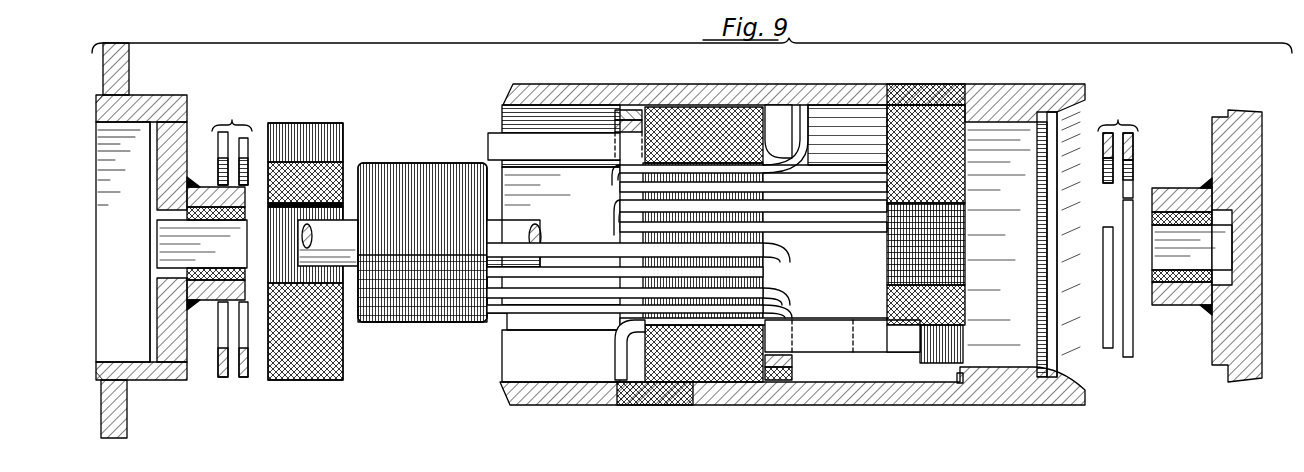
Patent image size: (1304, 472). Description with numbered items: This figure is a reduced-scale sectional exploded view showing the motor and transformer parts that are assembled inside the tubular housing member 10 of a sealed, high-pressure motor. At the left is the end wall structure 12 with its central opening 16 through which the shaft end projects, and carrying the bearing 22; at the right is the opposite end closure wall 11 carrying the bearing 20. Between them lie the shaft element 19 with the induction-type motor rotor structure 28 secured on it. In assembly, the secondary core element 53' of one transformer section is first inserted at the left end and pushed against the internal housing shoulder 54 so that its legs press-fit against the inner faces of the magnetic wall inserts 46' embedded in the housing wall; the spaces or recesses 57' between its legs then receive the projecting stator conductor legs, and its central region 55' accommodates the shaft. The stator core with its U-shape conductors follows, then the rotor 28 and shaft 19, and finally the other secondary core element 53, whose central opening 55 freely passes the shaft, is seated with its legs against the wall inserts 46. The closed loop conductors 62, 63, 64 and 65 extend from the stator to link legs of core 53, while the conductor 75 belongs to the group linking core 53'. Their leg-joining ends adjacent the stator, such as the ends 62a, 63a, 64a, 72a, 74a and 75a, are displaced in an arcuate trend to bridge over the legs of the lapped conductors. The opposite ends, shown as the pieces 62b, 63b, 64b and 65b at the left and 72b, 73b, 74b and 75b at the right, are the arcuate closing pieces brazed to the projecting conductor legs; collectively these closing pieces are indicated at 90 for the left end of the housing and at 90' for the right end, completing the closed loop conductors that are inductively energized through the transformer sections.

The tubular housing member 10 is at (1018, 87).
The end closure wall 11 is at (1255, 153).
The end wall structure 12 is at (858, 348).
The central opening 16 is at (160, 274).
The shaft element 19 is at (518, 230).
The bearing 20 is at (1175, 276).
The bearing 22 is at (200, 272).
The motor rotor structure 28 is at (400, 163).
The wall insert elements 46 is at (678, 383).
The wall inserts 46' is at (927, 128).
The secondary core element 53 is at (322, 250).
The secondary core element 53' is at (947, 300).
The internal housing shoulder 54 is at (958, 384).
The central opening 55 is at (328, 243).
The coil winding 55' is at (948, 244).
The spaces or recesses 57' is at (947, 344).
The closed loop conductor 62 is at (497, 313).
The end of conductor 62 62a is at (772, 380).
The end of conductor 62 62b is at (217, 373).
The closed loop conductor 63 is at (545, 328).
The end of conductor 63 63a is at (784, 380).
The end of conductor 63 63b is at (242, 379).
The closed loop conductor 64 is at (487, 133).
The end of conductor 64 64a is at (778, 112).
The end of conductor 64 64b is at (220, 156).
The closed loop conductor 65 is at (583, 172).
The end of conductor 65 65b is at (249, 148).
The end of conductor 72 72a is at (617, 358).
The end of conductor 72 72b is at (1134, 351).
The end of conductor 73 73b is at (1108, 349).
The end of conductor 74 74a is at (628, 110).
The end of conductor 74 74b is at (1134, 170).
The closed loop conductor 75 is at (814, 163).
The end of conductor 75 75a is at (645, 120).
The end of conductor 75 75b is at (1108, 184).
The arcuate closing pieces 90 is at (232, 115).
The arcuate closing pieces 90' is at (1118, 115).